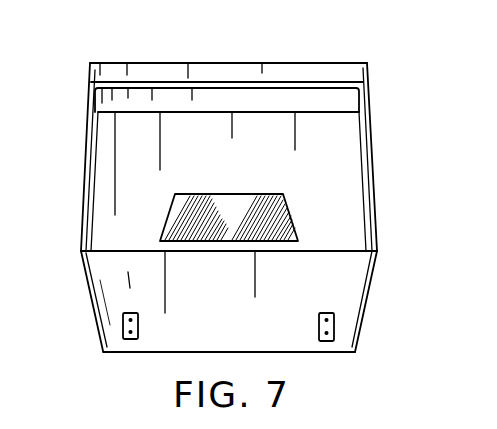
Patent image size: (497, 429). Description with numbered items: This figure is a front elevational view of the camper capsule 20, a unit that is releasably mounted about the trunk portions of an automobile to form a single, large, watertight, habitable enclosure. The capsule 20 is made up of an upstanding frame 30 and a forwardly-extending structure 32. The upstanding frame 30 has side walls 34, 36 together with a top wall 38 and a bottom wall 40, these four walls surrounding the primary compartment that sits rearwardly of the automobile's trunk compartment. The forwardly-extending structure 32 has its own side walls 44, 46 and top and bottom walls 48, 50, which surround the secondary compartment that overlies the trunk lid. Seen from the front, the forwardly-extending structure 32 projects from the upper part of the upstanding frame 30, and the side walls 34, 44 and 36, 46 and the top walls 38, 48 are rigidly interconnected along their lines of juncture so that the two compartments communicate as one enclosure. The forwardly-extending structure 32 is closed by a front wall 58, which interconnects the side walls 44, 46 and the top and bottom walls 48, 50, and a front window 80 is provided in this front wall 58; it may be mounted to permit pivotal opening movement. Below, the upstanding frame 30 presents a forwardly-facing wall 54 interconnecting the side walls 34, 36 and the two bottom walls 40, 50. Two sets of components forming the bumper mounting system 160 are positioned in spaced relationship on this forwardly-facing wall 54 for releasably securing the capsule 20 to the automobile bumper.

The camper capsule 20 is at (78, 58).
The upstanding frame 30 is at (91, 281).
The forwardly-extending structure 32 is at (98, 151).
The side wall 34 is at (372, 272).
The side wall 36 is at (83, 268).
The top wall 38 is at (287, 73).
The bottom wall 40 is at (286, 354).
The side wall 44 is at (367, 168).
The side wall 46 is at (90, 187).
The top wall 48 is at (337, 100).
The bottom wall 50 is at (292, 257).
The forwardly-facing wall 54 is at (354, 313).
The front wall 58 is at (347, 200).
The front window 80 is at (175, 195).
The bumper mounting system 160 is at (139, 333).